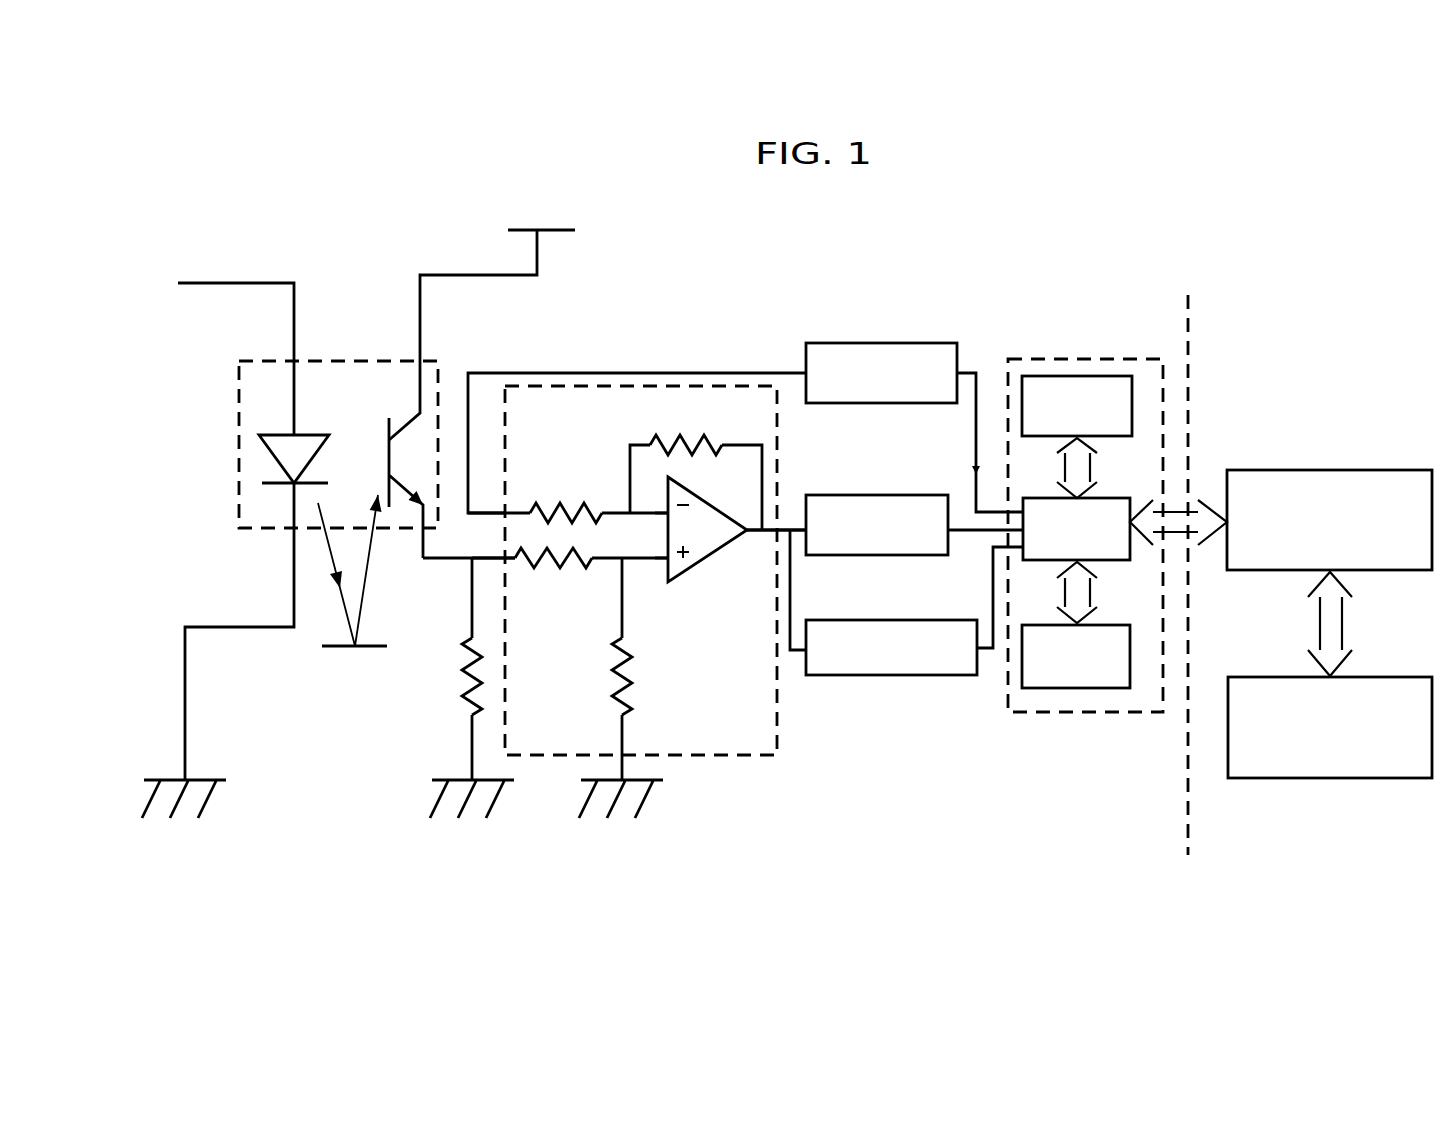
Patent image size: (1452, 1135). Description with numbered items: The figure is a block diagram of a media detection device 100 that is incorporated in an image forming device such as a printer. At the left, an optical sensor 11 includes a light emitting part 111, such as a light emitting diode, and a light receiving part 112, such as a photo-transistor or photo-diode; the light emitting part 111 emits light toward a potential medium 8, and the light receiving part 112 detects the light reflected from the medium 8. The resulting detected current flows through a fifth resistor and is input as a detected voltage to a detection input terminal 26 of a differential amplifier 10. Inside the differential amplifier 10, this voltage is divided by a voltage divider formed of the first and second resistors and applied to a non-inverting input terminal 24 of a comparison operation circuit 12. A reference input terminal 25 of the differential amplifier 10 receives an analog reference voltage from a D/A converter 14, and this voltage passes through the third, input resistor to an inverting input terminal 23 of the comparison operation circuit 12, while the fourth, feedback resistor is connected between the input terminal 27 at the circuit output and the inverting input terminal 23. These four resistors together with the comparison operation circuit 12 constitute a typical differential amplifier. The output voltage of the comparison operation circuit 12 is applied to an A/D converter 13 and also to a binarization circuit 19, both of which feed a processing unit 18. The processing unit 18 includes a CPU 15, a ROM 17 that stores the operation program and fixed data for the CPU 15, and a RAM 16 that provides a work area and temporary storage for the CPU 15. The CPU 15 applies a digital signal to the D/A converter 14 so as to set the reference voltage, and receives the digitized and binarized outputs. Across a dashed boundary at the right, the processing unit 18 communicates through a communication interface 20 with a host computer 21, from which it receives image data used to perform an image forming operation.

The medium 8 is at (340, 653).
The differential amplifier 10 is at (778, 705).
The optical sensor 11 is at (327, 360).
The light emitting part 111 is at (262, 443).
The light receiving part 112 is at (389, 450).
The comparison operation circuit 12 is at (707, 562).
The A/D converter 13 is at (853, 495).
The D/A converter 14 is at (873, 343).
The CPU 15 is at (1137, 478).
The RAM 16 is at (1097, 376).
The ROM 17 is at (1060, 688).
The processing unit 18 is at (1018, 359).
The binarization circuit 19 is at (940, 677).
The communication interface 20 is at (1242, 470).
The host computer 21 is at (1235, 677).
The inverting input terminal 23 is at (645, 502).
The non-inverting input terminal 24 is at (668, 568).
The reference input terminal 25 is at (502, 517).
The detection input terminal 26 is at (507, 560).
The input terminal 27 is at (792, 525).
The media detection device 100 is at (742, 292).